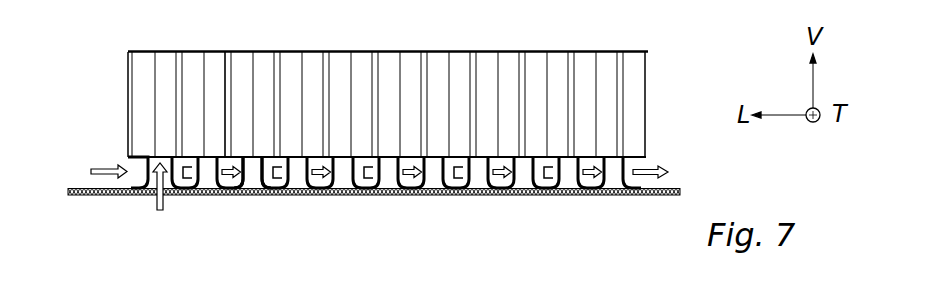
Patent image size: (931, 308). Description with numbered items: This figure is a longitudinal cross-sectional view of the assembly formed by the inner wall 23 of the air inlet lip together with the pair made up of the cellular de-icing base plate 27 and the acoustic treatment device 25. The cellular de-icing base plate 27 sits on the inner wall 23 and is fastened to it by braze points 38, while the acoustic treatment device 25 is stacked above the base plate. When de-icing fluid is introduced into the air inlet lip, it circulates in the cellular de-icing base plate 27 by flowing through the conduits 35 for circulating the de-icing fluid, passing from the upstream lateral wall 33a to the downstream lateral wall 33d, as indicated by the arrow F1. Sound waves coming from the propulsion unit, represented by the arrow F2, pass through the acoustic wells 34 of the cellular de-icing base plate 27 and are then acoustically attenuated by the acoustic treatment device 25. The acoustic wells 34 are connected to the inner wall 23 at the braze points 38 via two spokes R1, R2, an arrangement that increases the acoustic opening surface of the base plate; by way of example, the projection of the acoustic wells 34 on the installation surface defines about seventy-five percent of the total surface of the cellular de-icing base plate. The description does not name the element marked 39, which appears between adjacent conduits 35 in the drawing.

The inner wall 23 is at (437, 195).
The acoustic treatment device 25 is at (648, 93).
The cellular de-icing base plate 27 is at (636, 162).
The upstream lateral wall 33a is at (140, 169).
The downstream lateral wall 33d is at (631, 185).
The acoustic wells 34 is at (216, 150).
The conduits for circulating the de-icing fluid 35 is at (217, 193).
The braze points 38 is at (320, 196).
The connecting wall 39 is at (298, 195).
The arrow F1 is at (109, 143).
The arrow F2 is at (160, 202).
The spoke R1 is at (250, 193).
The spoke R2 is at (254, 193).